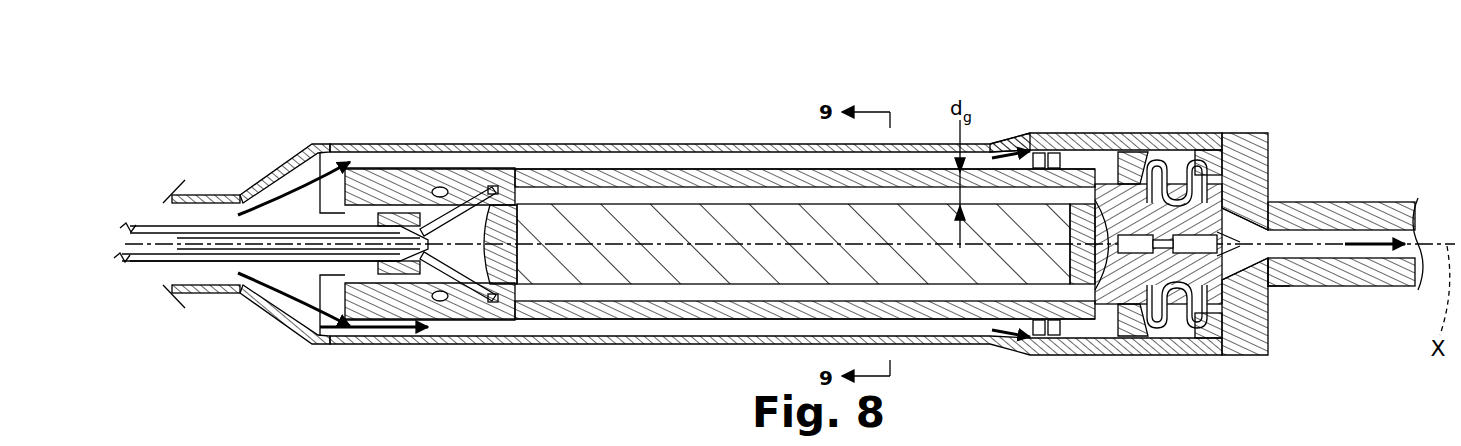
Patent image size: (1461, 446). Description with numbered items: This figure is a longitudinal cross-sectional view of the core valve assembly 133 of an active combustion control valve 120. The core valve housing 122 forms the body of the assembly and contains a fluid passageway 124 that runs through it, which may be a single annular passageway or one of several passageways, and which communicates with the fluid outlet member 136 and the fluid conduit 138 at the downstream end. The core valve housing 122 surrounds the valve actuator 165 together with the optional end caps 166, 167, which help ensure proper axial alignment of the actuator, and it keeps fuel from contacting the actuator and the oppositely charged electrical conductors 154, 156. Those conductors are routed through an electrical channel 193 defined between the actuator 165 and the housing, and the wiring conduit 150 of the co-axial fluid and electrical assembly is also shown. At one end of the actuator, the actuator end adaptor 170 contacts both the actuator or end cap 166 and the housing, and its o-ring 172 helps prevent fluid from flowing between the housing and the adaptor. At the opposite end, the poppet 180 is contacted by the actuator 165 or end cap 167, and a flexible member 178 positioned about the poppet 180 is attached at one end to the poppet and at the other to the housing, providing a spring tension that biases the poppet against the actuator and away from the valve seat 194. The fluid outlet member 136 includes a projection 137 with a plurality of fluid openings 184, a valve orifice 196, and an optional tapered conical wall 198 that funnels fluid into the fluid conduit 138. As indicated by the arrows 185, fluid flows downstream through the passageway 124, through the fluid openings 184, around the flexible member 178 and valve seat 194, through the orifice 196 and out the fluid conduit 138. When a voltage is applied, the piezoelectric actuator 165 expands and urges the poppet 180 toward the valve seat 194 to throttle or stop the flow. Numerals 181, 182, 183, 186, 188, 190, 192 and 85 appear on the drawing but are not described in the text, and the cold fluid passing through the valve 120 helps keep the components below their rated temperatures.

The active combustion control valve 120 is at (350, 88).
The core valve housing 122 is at (692, 150).
The fluid passageway 124 is at (757, 165).
The core valve assembly 133 is at (882, 85).
The fluid outlet member 136 is at (1265, 132).
The projection 137 is at (1133, 165).
The fluid conduit 138 is at (1357, 282).
The wiring conduit 150 is at (232, 298).
The electrical conductor 154 is at (142, 236).
The electrical conductor 156 is at (167, 262).
The valve actuator 165 is at (660, 245).
The end cap 166 is at (482, 292).
The end cap 167 is at (1080, 265).
The actuator end adaptor 170 is at (430, 198).
The o-ring 172 is at (440, 185).
The flexible member 178 is at (1160, 300).
The poppet 180 is at (1118, 290).
The central bore 181 is at (1108, 305).
The upper bellows 182 is at (1075, 150).
The piston seat 183 is at (1095, 300).
The fluid opening 184 is at (1205, 165).
The arrows 185 is at (1368, 245).
The inlet tube 186 is at (198, 197).
The needle passage 188 is at (215, 277).
The cone 190 is at (480, 180).
The lower bore 192 is at (445, 318).
The electrical channel 193 is at (632, 178).
The valve seat 194 is at (1250, 215).
The valve orifice 196 is at (1275, 292).
The tapered conical wall 198 is at (1252, 262).
The flow arrows 85 is at (268, 175).